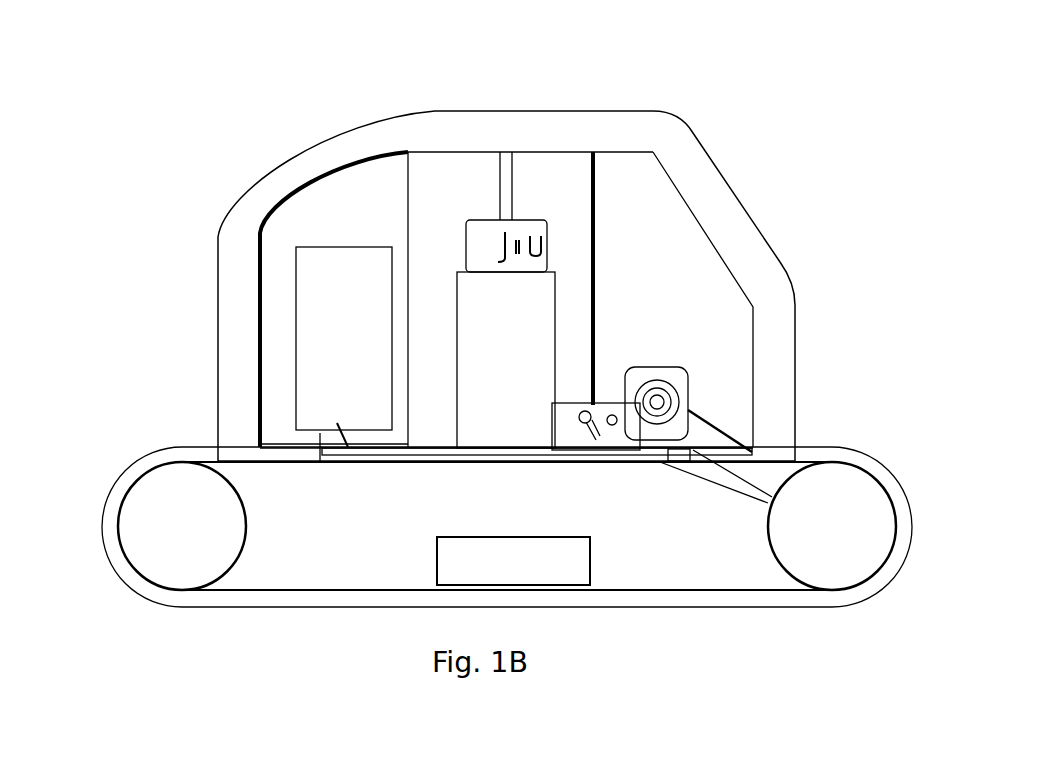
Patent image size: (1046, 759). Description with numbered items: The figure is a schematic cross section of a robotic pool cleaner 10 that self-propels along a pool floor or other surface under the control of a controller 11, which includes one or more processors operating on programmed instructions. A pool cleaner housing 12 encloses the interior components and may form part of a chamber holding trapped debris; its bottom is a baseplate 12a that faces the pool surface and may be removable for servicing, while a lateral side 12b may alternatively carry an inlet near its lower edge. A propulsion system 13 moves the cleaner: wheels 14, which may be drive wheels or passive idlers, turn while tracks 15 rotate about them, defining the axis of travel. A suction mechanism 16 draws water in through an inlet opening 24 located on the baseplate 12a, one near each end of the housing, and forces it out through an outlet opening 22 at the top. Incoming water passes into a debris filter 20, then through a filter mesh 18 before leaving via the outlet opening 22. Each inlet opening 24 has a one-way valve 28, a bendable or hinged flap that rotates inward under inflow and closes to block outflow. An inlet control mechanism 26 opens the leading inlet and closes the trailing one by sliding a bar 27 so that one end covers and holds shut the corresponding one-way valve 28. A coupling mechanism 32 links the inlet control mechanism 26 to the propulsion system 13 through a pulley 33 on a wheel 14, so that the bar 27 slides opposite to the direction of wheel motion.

The robotic pool cleaner 10 is at (218, 146).
The controller 11 is at (475, 537).
The pool cleaner housing 12 is at (735, 205).
The baseplate 12a is at (271, 464).
The lateral side 12b is at (215, 410).
The propulsion system 13 is at (280, 568).
The wheels 14 is at (142, 497).
The tracks 15 is at (335, 595).
The suction mechanism 16 is at (558, 345).
The filter mesh 18 is at (407, 257).
The debris filter 20 is at (280, 292).
The outlet opening 22 is at (512, 132).
The inlet opening 24 is at (338, 445).
The inlet control mechanism 26 is at (553, 482).
The bar 27 is at (580, 462).
The one-way valve 28 is at (341, 432).
The coupling mechanism 32 is at (662, 400).
The pulley 33 is at (760, 432).